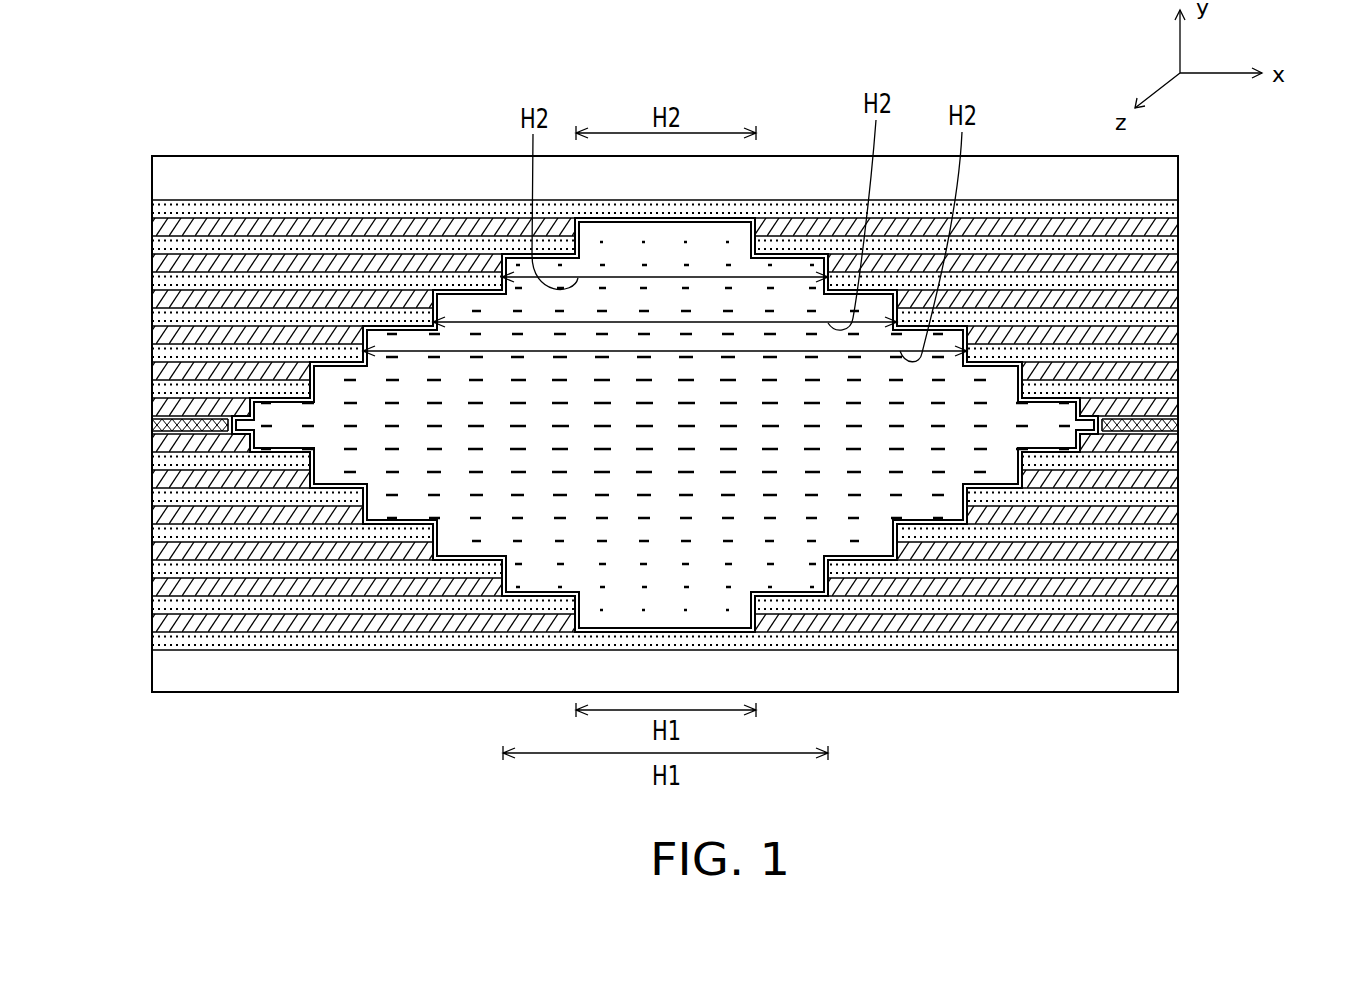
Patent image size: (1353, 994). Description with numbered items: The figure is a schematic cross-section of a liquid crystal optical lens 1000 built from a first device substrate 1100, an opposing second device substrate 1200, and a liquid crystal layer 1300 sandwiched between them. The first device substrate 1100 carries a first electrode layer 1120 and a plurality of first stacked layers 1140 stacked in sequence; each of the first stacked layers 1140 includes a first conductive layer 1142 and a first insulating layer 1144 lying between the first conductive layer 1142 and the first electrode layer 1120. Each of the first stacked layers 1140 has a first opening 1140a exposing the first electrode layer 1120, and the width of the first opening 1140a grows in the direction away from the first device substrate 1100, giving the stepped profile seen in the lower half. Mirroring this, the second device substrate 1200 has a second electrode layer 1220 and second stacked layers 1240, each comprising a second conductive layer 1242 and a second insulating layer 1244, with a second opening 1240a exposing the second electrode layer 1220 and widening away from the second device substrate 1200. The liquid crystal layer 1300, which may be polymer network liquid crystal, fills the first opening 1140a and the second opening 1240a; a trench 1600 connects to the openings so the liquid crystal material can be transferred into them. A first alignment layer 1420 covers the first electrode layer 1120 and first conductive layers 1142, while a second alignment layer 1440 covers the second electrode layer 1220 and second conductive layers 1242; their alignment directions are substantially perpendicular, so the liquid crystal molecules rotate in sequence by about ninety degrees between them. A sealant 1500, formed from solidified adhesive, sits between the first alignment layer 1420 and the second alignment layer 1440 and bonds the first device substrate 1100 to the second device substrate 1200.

The liquid crystal optical lens 1000 is at (1193, 796).
The first device substrate 1100 is at (746, 621).
The first electrode layer 1120 is at (263, 650).
The first stacked layers 1140 is at (665, 630).
The first conductive layer 1142 is at (425, 605).
The first insulating layer 1144 is at (357, 620).
The first opening 1140a is at (731, 578).
The second device substrate 1200 is at (746, 234).
The second electrode layer 1220 is at (236, 206).
The second stacked layers 1240 is at (665, 225).
The second conductive layer 1242 is at (463, 247).
The second insulating layer 1244 is at (370, 222).
The second opening 1240a is at (704, 333).
The liquid crystal layer 1300 is at (608, 442).
The first alignment layer 1420 is at (1178, 461).
The second alignment layer 1440 is at (711, 392).
The sealant 1500 is at (152, 429).
The trench 1600 is at (1192, 431).